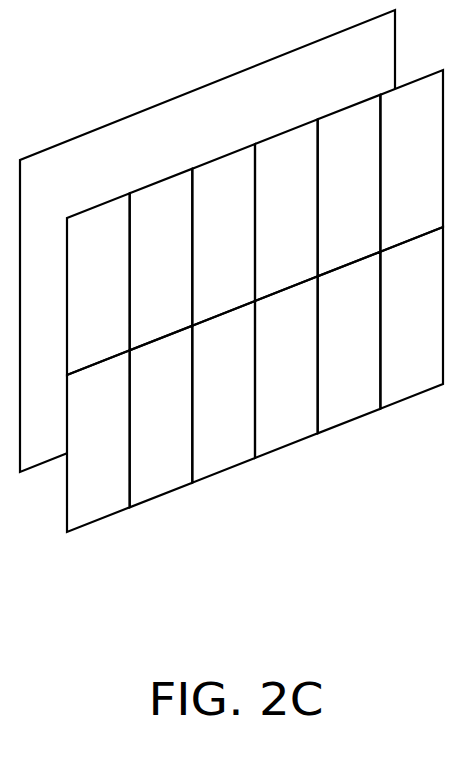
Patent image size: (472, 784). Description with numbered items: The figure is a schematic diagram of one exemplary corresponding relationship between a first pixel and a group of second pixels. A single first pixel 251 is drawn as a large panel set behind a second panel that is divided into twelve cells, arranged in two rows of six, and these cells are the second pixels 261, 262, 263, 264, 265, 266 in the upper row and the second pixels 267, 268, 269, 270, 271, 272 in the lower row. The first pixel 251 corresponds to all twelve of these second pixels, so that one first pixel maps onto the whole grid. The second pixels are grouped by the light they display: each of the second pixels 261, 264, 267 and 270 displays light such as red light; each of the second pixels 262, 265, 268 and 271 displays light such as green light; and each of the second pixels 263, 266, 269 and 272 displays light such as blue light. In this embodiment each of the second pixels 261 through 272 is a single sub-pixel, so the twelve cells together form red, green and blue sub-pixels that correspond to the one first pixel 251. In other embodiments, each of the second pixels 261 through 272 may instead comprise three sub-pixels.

The first pixel 251 is at (187, 138).
The second pixel 261 is at (78, 333).
The second pixel 262 is at (139, 309).
The second pixel 263 is at (201, 283).
The second pixel 264 is at (265, 256).
The second pixel 265 is at (328, 232).
The second pixel 266 is at (391, 208).
The second pixel 267 is at (78, 490).
The second pixel 268 is at (139, 464).
The second pixel 269 is at (201, 440).
The second pixel 270 is at (265, 414).
The second pixel 271 is at (328, 389).
The second pixel 272 is at (391, 364).